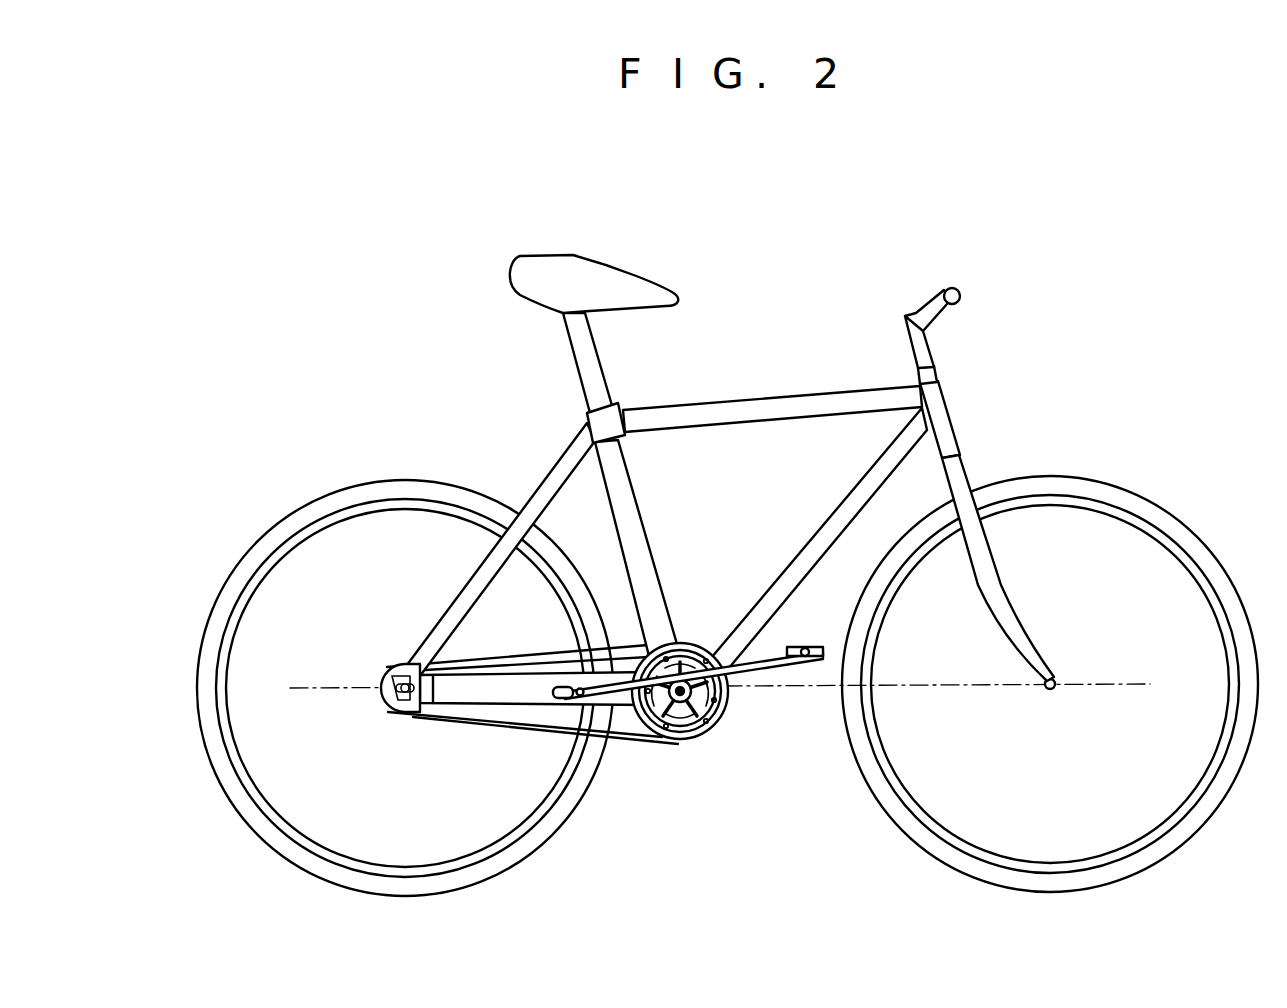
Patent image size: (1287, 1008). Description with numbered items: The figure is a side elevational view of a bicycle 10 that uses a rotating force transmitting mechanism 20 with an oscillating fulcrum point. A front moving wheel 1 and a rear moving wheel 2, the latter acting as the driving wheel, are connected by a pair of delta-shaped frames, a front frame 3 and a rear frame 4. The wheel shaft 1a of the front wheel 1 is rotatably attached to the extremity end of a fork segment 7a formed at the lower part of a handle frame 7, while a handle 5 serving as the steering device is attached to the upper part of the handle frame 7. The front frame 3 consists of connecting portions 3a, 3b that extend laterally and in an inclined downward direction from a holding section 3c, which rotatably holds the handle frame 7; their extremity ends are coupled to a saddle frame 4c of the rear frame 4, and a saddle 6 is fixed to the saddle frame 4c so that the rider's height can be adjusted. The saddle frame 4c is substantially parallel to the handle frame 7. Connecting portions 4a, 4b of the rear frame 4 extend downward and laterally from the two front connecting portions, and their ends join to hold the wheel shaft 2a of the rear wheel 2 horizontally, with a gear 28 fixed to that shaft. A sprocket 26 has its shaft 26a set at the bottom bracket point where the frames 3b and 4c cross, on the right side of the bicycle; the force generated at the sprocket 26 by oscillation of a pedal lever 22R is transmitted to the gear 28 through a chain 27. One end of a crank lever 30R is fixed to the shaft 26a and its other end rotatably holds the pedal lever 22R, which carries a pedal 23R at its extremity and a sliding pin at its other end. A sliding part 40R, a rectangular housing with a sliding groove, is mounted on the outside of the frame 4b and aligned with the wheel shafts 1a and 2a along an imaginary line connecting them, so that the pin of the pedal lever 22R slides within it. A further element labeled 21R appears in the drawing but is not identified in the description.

The front moving wheel 1 is at (1113, 480).
The wheel shaft 1a is at (1053, 691).
The rear moving wheel 2 is at (323, 489).
The wheel shaft 2a is at (400, 676).
The front frame 3 is at (822, 539).
The connecting portion 3a is at (748, 398).
The connecting portion 3b is at (843, 556).
The holding section 3c is at (955, 419).
The rear frame 4 is at (466, 595).
The connecting portion 4a is at (552, 468).
The connecting portion 4b is at (485, 662).
The saddle frame 4c is at (650, 501).
The handle 5 is at (927, 300).
The saddle 6 is at (612, 264).
The handle frame 7 is at (940, 372).
The fork segment 7a is at (993, 590).
The bicycle 10 is at (966, 275).
The rotating force transmitting mechanism 20 is at (727, 747).
The crank arm 21R is at (628, 645).
The pedal lever 22R is at (786, 645).
The pedal 23R is at (823, 661).
The sprocket 26 is at (647, 721).
The shaft of the sprocket 26a is at (688, 722).
The chain 27 is at (480, 727).
The gear 28 is at (393, 722).
The crank lever 30R is at (700, 689).
The sliding part 40R is at (572, 701).